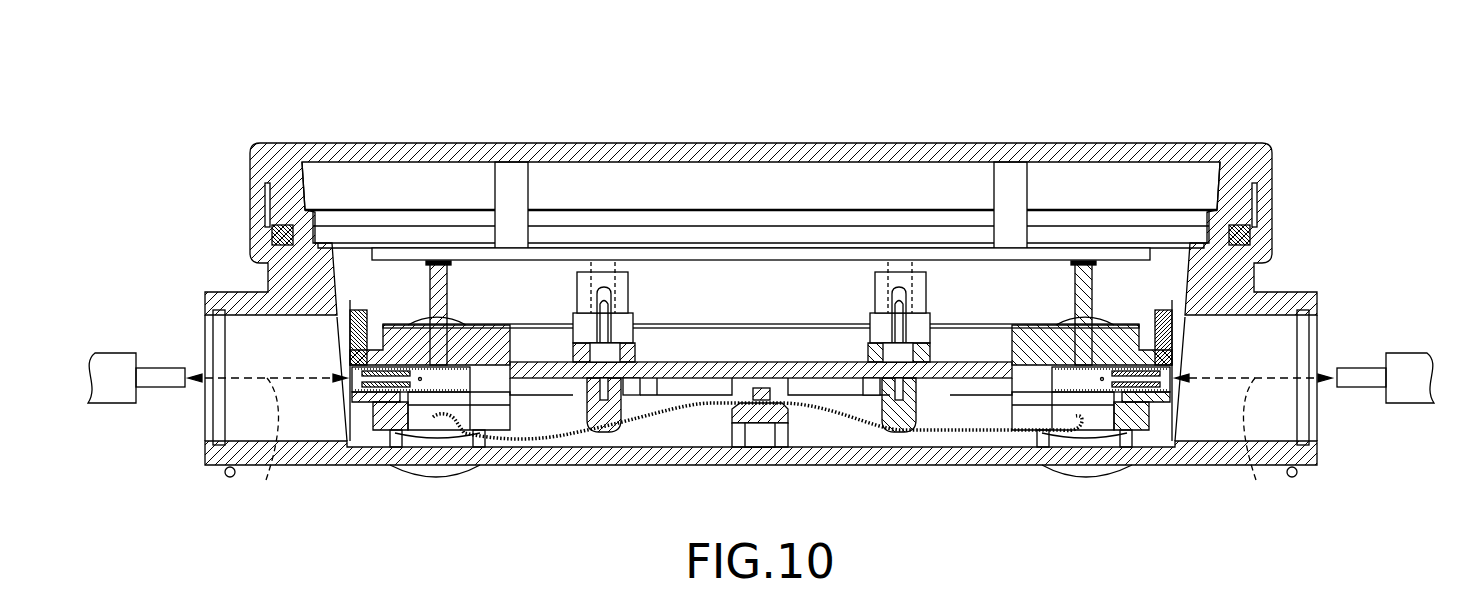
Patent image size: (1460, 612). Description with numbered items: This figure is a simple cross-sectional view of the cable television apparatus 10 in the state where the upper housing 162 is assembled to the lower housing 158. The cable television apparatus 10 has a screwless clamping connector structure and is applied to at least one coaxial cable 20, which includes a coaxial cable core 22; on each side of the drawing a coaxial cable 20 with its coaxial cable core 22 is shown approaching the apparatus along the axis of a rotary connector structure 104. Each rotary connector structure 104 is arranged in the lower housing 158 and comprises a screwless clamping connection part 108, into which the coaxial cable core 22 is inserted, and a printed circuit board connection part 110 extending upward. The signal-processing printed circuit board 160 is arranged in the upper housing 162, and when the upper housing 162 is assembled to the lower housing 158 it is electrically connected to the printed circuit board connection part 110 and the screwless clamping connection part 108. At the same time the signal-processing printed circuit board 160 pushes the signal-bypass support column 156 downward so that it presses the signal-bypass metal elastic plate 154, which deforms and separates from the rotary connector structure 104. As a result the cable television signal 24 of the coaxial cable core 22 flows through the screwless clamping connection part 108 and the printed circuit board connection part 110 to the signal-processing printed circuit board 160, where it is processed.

The cable television apparatus 10 is at (567, 113).
The coaxial cable 20 is at (100, 362).
The coaxial cable core 22 is at (158, 368).
The cable television signal 24 is at (759, 441).
The rotary connector structure 104 is at (345, 348).
The screwless clamping connection part 108 is at (368, 355).
The printed circuit board connection part 110 is at (448, 285).
The signal-bypass metal elastic plate 154 is at (838, 424).
The signal-bypass support column 156 is at (617, 263).
The lower housing 158 is at (636, 466).
The signal-processing printed circuit board 160 is at (776, 248).
The upper housing 162 is at (855, 145).